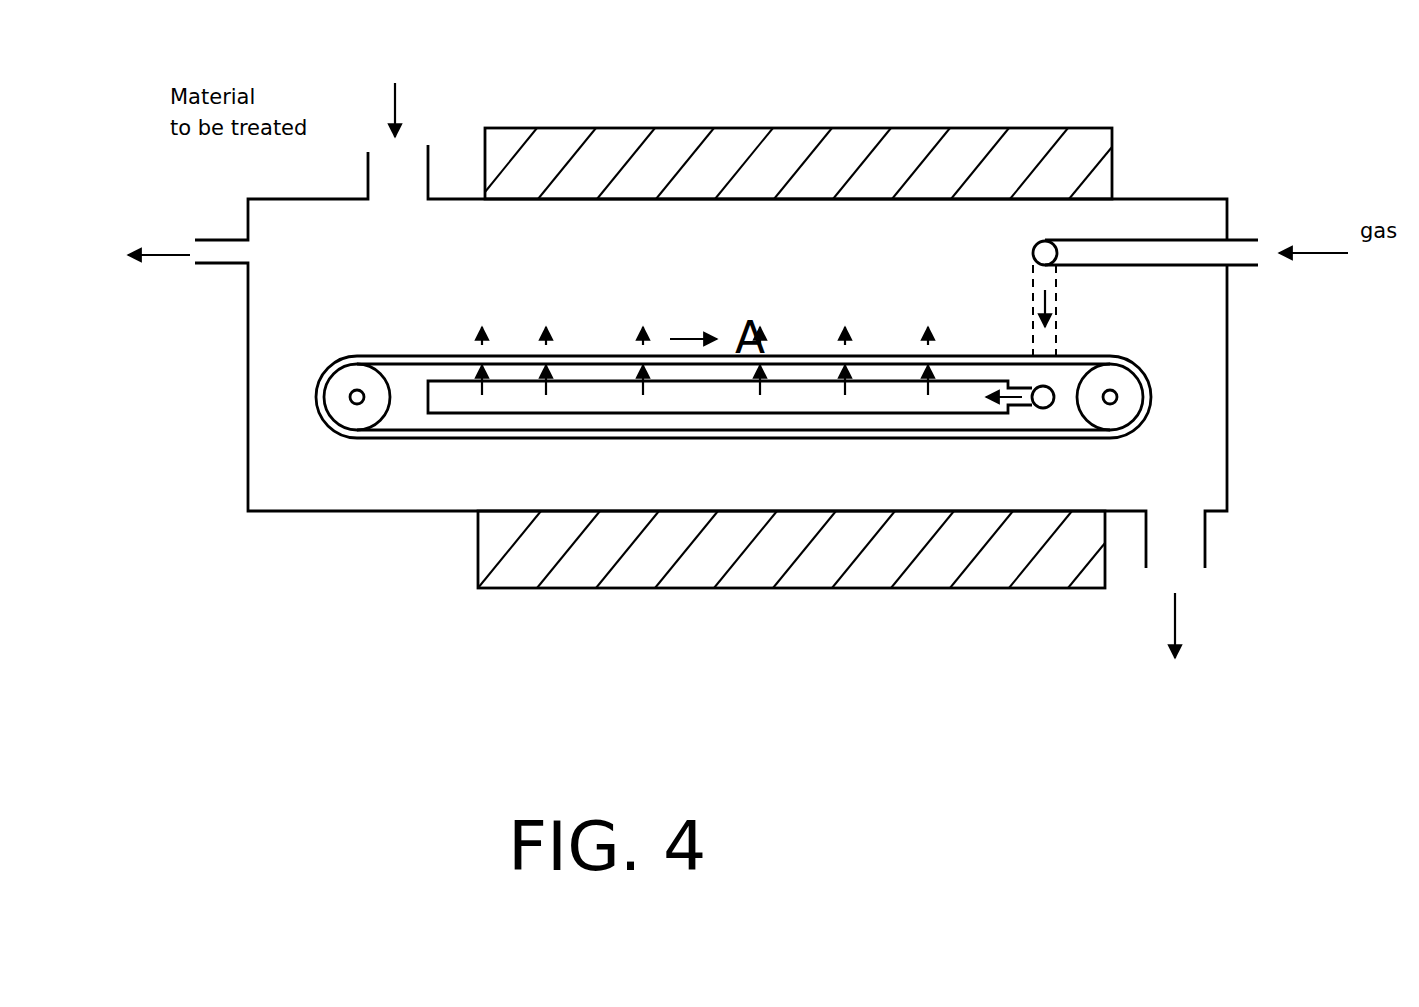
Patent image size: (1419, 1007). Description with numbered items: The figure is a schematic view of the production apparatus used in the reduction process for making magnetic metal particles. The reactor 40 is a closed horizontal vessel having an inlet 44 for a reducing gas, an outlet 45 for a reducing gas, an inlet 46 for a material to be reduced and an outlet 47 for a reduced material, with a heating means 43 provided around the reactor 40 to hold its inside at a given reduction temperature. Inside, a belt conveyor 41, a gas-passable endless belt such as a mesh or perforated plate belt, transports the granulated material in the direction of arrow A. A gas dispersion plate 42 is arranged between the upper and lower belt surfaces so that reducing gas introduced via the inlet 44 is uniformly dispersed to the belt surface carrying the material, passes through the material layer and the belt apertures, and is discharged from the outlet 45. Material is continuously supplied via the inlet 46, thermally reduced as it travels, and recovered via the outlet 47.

The reactor 40 is at (1190, 199).
The belt conveyor 41 is at (310, 411).
The gas dispersion plate 42 is at (530, 381).
The heating means 43 is at (762, 148).
The inlet for a reducing gas 44 is at (1258, 265).
The outlet for a reducing gas 45 is at (212, 253).
The inlet for a material to be reduced 46 is at (425, 145).
The outlet for a reduced material 47 is at (1200, 568).